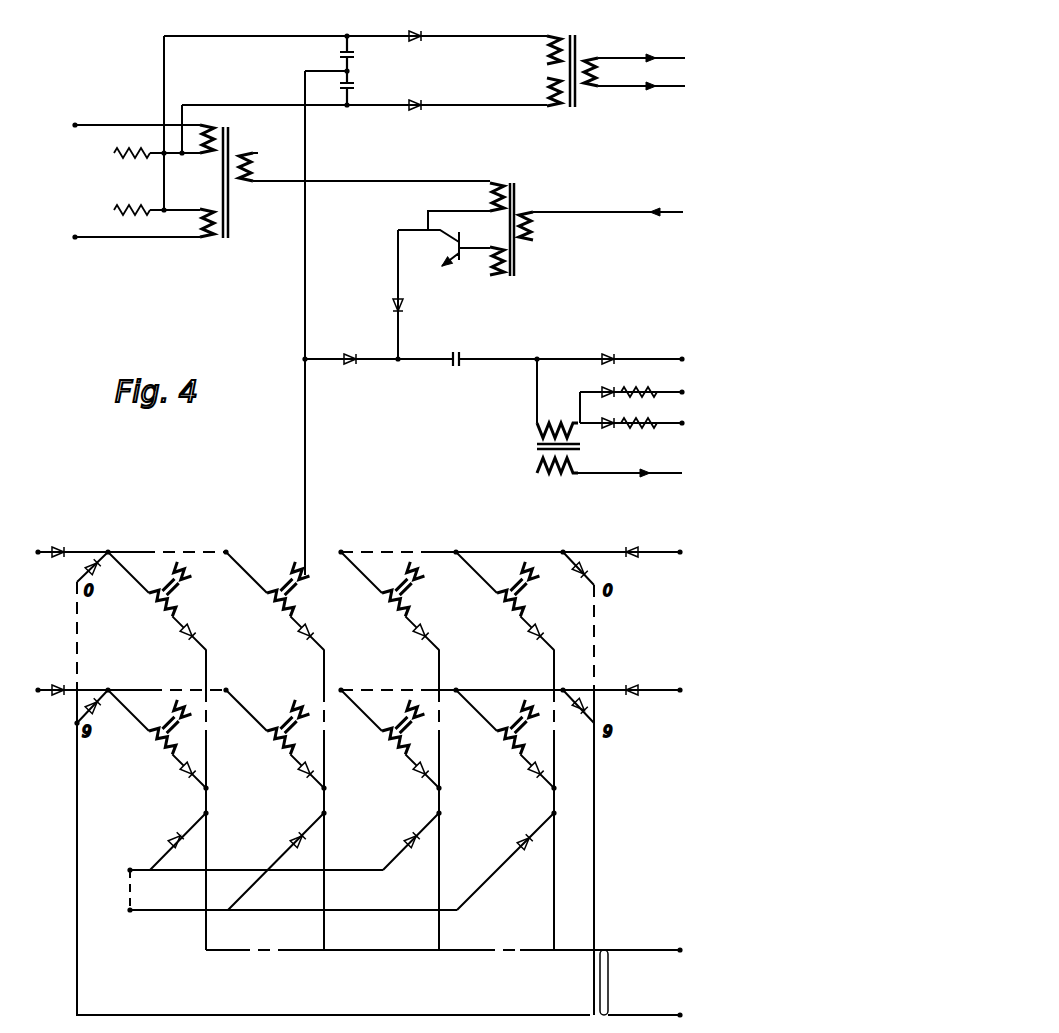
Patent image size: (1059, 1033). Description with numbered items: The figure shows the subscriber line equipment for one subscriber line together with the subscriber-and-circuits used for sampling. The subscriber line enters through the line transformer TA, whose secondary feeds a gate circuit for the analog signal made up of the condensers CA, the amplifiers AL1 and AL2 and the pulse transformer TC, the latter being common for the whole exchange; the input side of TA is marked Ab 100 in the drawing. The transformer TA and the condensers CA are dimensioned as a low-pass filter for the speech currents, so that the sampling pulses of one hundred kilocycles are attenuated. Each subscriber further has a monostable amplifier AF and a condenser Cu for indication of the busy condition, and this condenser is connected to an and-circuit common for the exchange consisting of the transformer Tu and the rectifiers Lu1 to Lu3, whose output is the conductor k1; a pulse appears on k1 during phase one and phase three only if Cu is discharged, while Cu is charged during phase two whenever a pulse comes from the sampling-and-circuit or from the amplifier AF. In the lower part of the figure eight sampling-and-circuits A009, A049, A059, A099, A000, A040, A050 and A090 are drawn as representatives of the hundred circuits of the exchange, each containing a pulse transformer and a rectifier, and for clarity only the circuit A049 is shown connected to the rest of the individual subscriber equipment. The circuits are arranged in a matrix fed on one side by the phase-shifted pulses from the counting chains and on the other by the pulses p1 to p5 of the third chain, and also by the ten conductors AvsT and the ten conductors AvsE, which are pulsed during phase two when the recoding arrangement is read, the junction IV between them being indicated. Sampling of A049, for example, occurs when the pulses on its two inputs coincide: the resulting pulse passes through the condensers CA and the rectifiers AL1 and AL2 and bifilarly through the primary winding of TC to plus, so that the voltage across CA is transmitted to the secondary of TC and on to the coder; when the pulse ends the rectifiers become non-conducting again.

The condensers CA is at (343, 70).
The amplifier AL1 is at (407, 23).
The amplifier AL2 is at (407, 122).
The input terminals Ab (i-100) Ab is at (117, 180).
The line transformer TA is at (345, 202).
The pulse transformer TC is at (605, 58).
The conductor 100 is at (510, 36).
The monostable amplifier AF is at (538, 272).
The condenser Cu is at (447, 349).
The rectifier Lu1 is at (610, 344).
The rectifier Lu3 is at (610, 457).
The conductor k1 is at (688, 428).
The transformer Tu is at (578, 421).
The sampling-and-circuit A009 is at (170, 606).
The sampling-and-circuit A049 is at (288, 606).
The sampling-and-circuit A059 is at (403, 606).
The sampling-and-circuit A099 is at (518, 606).
The sampling-and-circuit A000 is at (170, 805).
The sampling-and-circuit A040 is at (288, 805).
The sampling-and-circuit A050 is at (403, 805).
The sampling-and-circuit A090 is at (518, 805).
The pulse p1 is at (235, 881).
The pulse p5 is at (272, 909).
The conductor AvsT is at (444, 939).
The conductor AvsE is at (645, 1005).
The connector IV is at (605, 947).